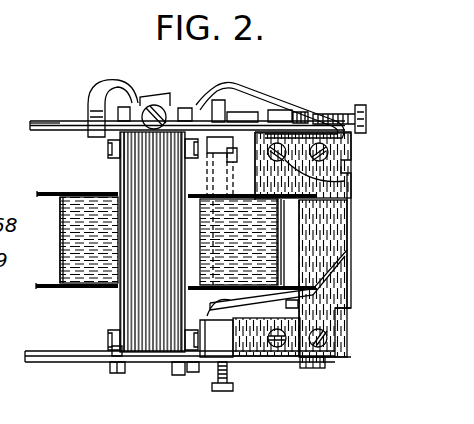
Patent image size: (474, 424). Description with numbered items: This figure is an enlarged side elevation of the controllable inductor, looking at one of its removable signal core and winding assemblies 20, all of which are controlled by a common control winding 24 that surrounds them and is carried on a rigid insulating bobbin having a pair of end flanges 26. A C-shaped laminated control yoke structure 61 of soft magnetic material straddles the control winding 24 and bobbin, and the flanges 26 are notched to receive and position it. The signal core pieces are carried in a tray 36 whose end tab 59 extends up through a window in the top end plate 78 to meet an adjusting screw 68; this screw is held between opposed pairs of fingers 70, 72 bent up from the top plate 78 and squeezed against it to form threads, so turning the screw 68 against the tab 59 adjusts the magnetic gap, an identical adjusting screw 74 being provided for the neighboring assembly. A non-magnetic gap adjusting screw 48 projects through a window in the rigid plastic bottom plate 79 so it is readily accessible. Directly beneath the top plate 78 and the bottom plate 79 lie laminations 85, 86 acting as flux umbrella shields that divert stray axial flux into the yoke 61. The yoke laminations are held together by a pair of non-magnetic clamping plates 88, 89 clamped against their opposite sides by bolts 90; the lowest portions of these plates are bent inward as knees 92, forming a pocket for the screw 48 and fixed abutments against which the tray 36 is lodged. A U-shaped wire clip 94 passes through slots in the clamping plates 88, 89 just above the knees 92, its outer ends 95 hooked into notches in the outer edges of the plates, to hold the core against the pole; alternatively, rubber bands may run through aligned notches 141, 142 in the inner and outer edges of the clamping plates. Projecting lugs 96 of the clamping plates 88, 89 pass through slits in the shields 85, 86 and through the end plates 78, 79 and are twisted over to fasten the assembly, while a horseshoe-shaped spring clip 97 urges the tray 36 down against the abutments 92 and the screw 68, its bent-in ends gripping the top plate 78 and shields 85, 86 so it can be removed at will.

The signal core and winding assembly 20 is at (233, 152).
The control winding 24 is at (60, 215).
The end flanges 26 is at (47, 192).
The tray 36 is at (30, 122).
The adjusting screw 48 is at (228, 391).
The end tab 59 is at (248, 104).
The control yoke structure 61 is at (153, 347).
The adjusting screw 68 is at (360, 104).
The fingers 70 is at (268, 110).
The fingers 72 is at (322, 112).
The adjusting screw 74 is at (150, 102).
The top end plate 78 is at (48, 120).
The bottom plate 79 is at (72, 362).
The lamination shield 85 is at (53, 132).
The lamination shield 86 is at (25, 352).
The clamping plate 88 is at (118, 347).
The clamping plate 89 is at (190, 352).
The bolts 90 is at (108, 150).
The knees 92 is at (220, 342).
The wire clip 94 is at (292, 306).
The outer ends 95 is at (349, 251).
The projecting lugs 96 is at (140, 88).
The spring clip 97 is at (96, 103).
The notches 141 is at (208, 320).
The notches 142 is at (346, 324).